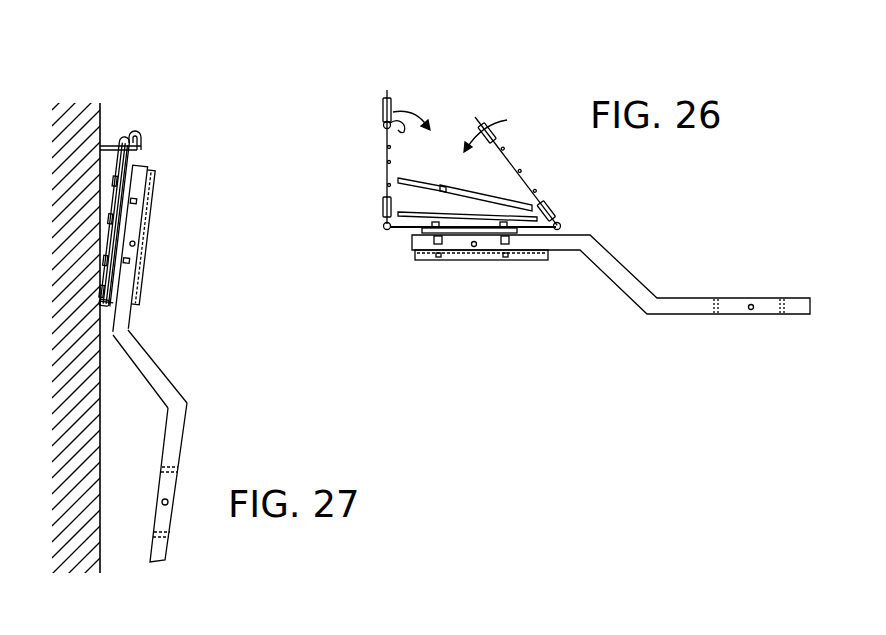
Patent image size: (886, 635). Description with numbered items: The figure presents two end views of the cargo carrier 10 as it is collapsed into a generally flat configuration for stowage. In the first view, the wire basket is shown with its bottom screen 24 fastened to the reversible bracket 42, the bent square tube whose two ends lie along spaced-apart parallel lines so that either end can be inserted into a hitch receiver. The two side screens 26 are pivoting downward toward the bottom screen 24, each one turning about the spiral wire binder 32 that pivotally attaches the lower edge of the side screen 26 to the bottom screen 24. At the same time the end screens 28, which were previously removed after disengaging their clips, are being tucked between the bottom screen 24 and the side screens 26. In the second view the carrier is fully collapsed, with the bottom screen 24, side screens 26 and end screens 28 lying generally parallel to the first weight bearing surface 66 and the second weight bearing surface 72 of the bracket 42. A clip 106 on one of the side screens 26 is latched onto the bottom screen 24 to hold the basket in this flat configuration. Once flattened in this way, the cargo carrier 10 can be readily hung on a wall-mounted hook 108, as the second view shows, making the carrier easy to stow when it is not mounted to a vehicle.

In FIG. 27, the cargo carrier 10 is at (224, 292).
In FIG. 26, the cargo carrier 10 is at (711, 222).
In FIG. 27, the bottom screen 24 is at (131, 155).
In FIG. 26, the bottom screen 24 is at (398, 236).
In FIG. 26, the side screens 26 is at (385, 172).
In FIG. 26, the end screens 28 is at (408, 212).
In FIG. 26, the spiral wire binder 32 is at (562, 227).
In FIG. 27, the reversible bracket 42 is at (167, 374).
In FIG. 27, the first weight bearing surface 66 is at (183, 458).
In FIG. 27, the second weight bearing surface 72 is at (112, 323).
In FIG. 26, the clip 106 is at (384, 133).
In FIG. 27, the wall-mounted hook 108 is at (143, 141).